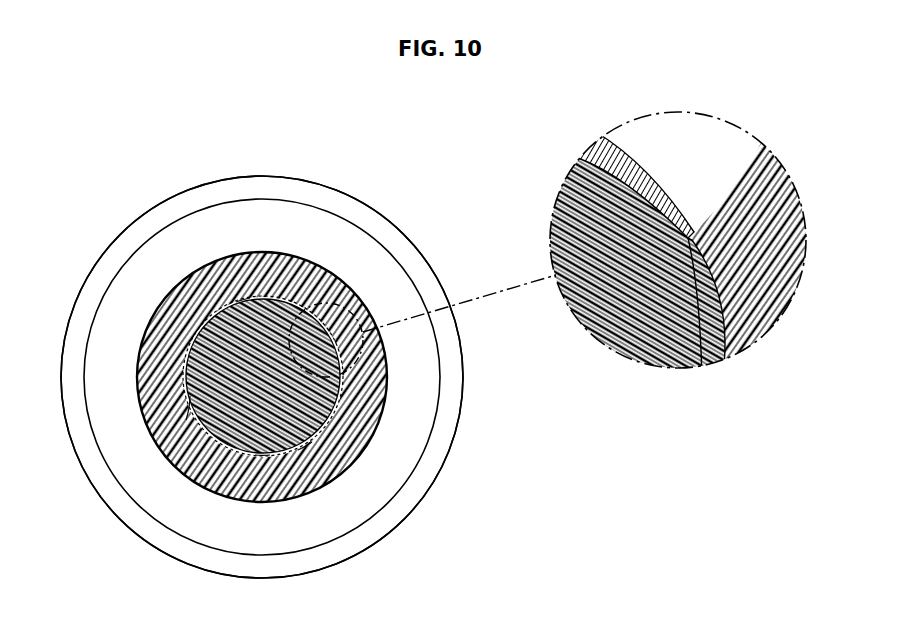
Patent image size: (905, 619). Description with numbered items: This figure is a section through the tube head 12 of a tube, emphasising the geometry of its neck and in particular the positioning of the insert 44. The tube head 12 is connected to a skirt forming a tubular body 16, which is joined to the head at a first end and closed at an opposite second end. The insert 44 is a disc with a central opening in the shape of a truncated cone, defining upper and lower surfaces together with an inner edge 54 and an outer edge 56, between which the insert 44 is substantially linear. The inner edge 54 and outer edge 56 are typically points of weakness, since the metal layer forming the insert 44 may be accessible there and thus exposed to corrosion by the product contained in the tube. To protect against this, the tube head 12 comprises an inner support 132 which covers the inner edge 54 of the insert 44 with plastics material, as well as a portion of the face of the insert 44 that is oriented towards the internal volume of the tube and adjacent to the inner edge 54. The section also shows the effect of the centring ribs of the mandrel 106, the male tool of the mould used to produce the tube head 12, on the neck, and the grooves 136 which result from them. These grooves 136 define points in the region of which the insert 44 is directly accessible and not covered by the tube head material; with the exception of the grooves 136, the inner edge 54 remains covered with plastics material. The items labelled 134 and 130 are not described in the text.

The tube head 12 is at (260, 174).
The tubular body 16 is at (433, 482).
The outer edge 56 is at (430, 440).
The insert 44 is at (228, 283).
The mandrel 106 is at (220, 367).
The interface layer 134 is at (185, 422).
The grooves 136 is at (188, 396).
The inner support 132 is at (242, 300).
The diffusion zone 130 is at (305, 443).
The inner edge 54 is at (217, 332).